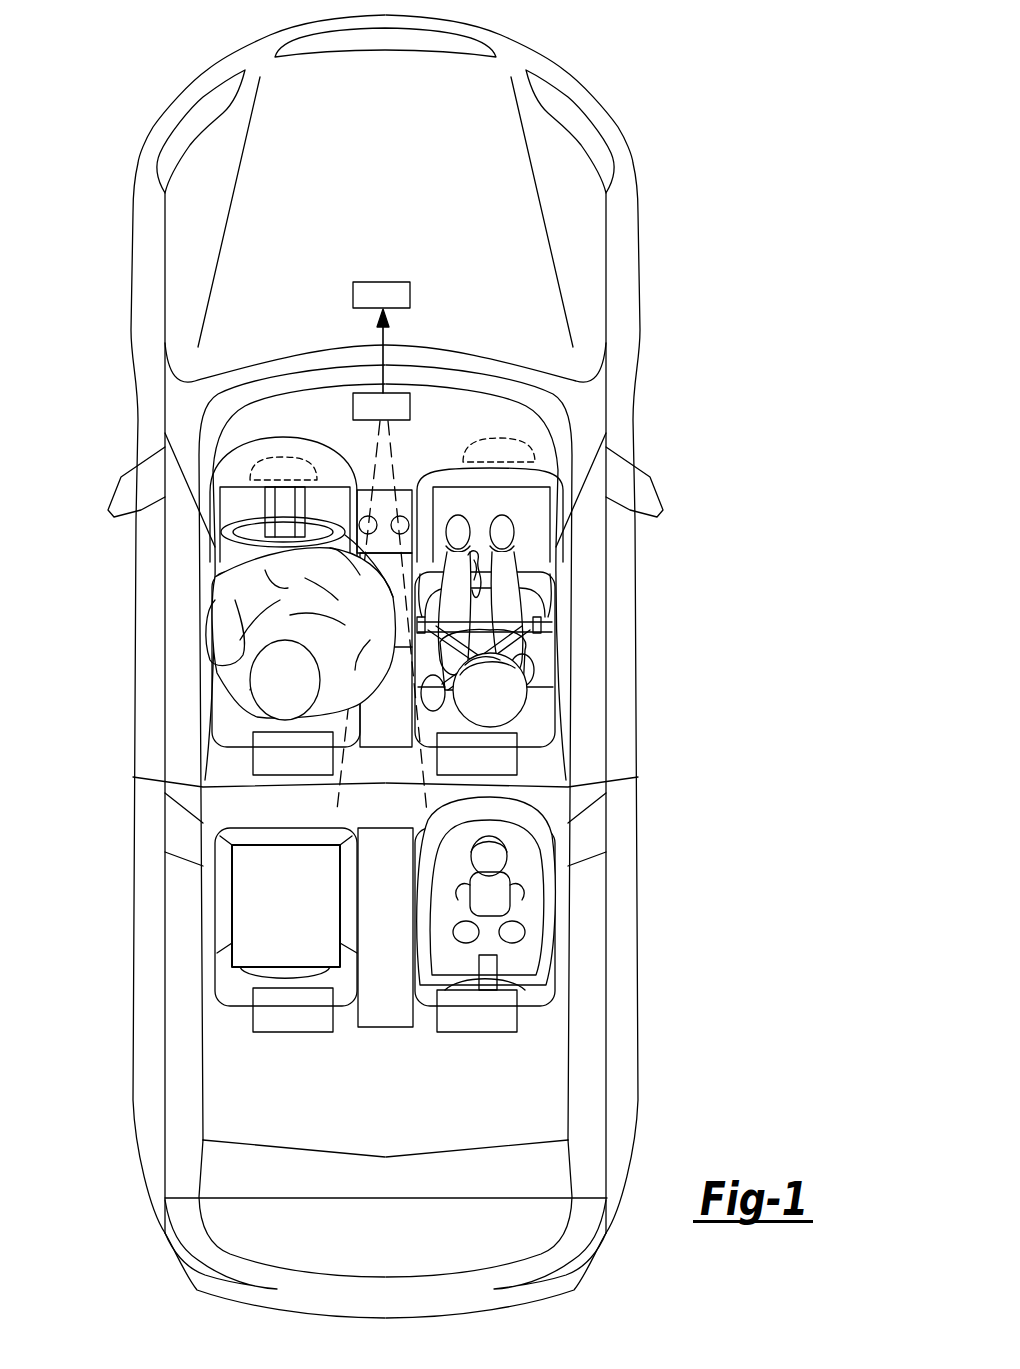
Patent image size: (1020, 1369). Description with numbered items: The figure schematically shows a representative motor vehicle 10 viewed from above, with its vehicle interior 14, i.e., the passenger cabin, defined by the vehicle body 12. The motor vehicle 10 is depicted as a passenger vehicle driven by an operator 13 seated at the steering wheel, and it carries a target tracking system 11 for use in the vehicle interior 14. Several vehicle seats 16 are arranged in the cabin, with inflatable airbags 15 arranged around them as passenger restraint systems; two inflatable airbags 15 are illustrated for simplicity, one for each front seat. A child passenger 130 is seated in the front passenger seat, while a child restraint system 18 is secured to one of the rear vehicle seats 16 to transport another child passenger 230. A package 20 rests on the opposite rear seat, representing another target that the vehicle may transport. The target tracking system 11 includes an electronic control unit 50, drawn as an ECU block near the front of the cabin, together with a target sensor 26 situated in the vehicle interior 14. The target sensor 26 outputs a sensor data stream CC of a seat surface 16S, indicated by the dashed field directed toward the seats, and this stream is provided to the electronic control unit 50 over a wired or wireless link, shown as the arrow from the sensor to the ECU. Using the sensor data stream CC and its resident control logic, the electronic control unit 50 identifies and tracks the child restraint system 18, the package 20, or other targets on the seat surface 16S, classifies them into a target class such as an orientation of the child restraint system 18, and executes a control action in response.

The motor vehicle 10 is at (391, 666).
The target tracking system 11 is at (367, 259).
The vehicle body 12 is at (150, 315).
The operator 13 is at (233, 607).
The vehicle interior 14 is at (391, 658).
The inflatable airbags 15 is at (490, 440).
The vehicle seats 16 is at (538, 731).
The seat surface 16S is at (391, 750).
The child restraint system 18 is at (562, 893).
The package 20 is at (303, 917).
The target sensor 26 is at (352, 406).
The electronic control unit 50 is at (411, 296).
The child passenger 130 is at (507, 694).
The child passenger 230 is at (511, 933).
The sensor data stream CC is at (384, 330).